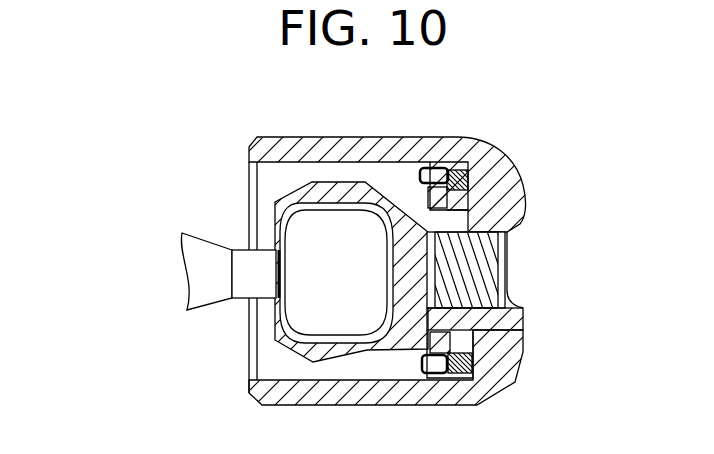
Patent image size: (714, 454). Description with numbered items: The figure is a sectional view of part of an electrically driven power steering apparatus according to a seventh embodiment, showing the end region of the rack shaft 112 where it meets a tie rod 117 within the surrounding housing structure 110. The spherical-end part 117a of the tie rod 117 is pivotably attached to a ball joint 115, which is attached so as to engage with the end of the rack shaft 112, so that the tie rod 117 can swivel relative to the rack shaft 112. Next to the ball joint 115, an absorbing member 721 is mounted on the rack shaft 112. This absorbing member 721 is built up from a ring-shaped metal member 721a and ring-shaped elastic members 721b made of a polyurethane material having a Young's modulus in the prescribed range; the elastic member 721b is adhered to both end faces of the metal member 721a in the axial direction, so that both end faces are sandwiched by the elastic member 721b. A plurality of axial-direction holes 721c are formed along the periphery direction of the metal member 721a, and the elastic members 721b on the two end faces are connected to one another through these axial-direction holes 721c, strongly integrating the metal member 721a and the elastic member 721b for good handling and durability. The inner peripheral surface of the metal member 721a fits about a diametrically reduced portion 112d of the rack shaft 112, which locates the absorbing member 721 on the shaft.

The holder 110 is at (283, 152).
The rack shaft 112 is at (508, 200).
The diametrically reduced portion 112d is at (500, 337).
The ball joint 115 is at (300, 191).
The tie rod 117 is at (200, 268).
The spherical-end part 117a is at (315, 307).
The absorbing member 721 is at (470, 180).
The metal member 721a is at (480, 207).
The elastic member 721b is at (468, 195).
The axial-direction holes 721c is at (432, 168).